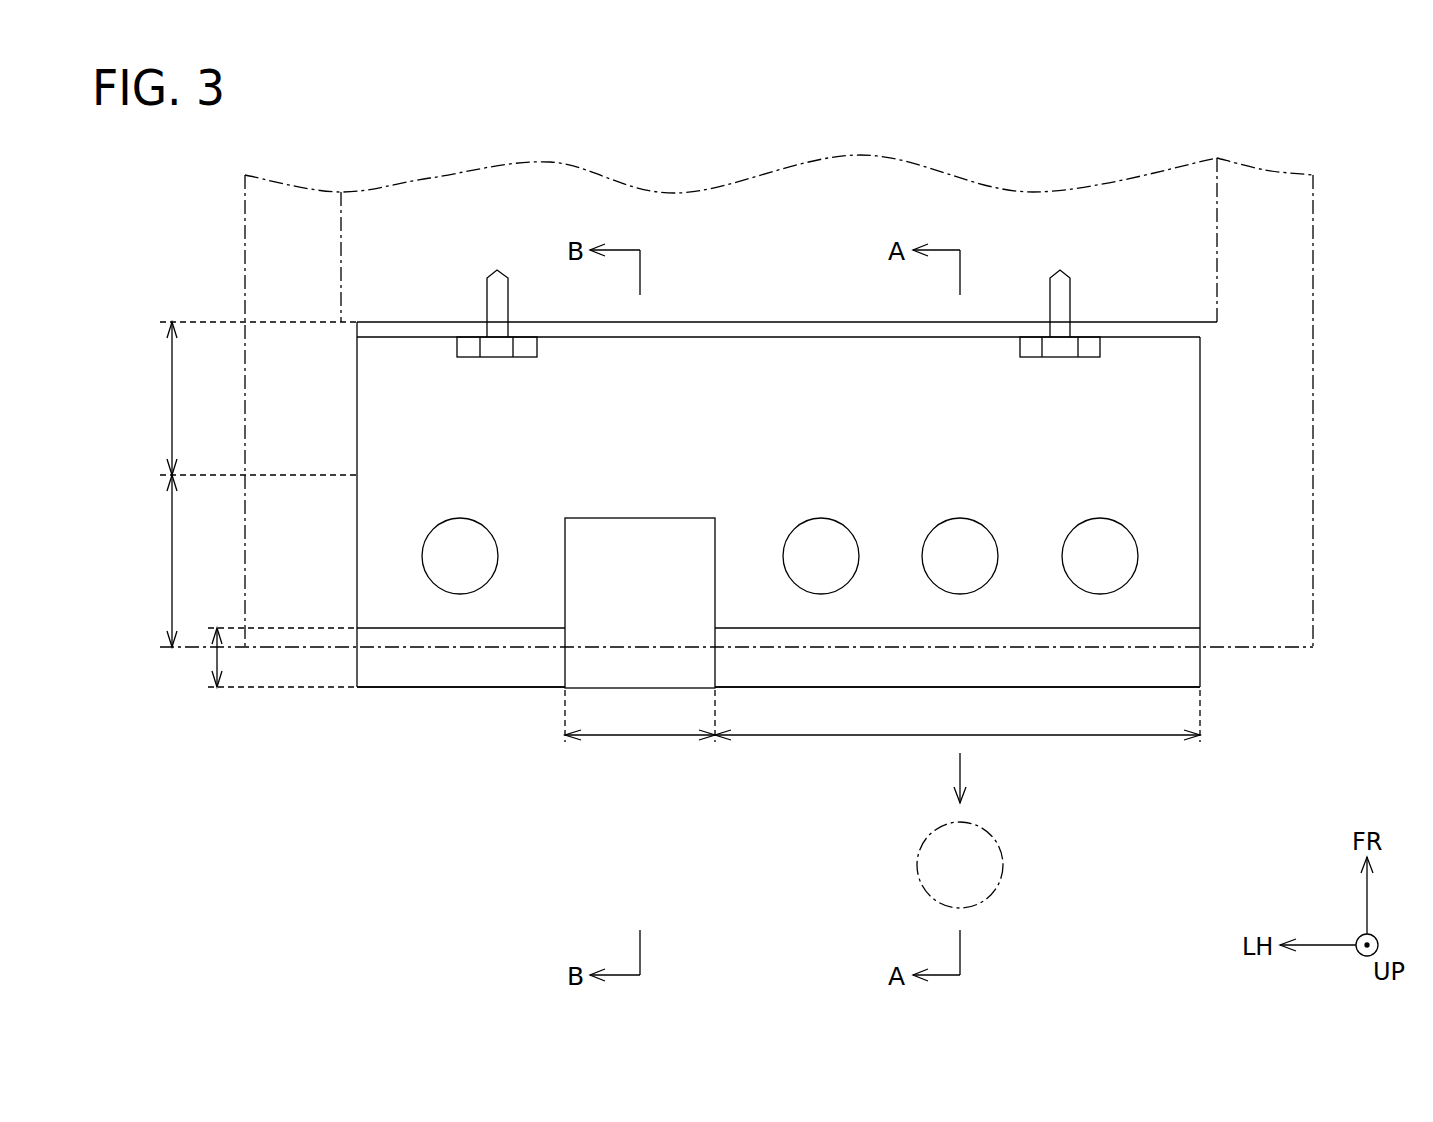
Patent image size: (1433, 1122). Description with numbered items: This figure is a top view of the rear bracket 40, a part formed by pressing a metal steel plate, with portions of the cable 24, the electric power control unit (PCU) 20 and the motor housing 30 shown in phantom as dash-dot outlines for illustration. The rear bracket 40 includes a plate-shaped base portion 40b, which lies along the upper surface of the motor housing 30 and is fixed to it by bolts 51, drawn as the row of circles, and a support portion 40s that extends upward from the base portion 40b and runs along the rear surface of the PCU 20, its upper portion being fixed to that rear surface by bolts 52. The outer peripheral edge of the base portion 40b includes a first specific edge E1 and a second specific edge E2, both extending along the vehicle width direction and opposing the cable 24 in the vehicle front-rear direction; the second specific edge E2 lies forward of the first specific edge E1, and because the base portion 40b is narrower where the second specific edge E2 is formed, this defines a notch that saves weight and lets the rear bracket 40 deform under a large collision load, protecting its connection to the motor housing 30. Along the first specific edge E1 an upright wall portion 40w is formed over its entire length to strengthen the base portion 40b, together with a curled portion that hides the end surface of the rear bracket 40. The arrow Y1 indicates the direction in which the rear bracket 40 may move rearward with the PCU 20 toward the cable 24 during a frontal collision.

The PCU 20 is at (341, 255).
The cable 24 is at (1003, 868).
The motor housing 30 is at (245, 240).
The rear bracket 40 is at (1208, 452).
The support portion 40s is at (172, 403).
The base portion 40b is at (172, 553).
The upright wall portion 40w is at (210, 657).
The bolts 51 is at (461, 568).
The bolts 52 is at (470, 348).
The first specific edge E1 is at (805, 737).
The second specific edge E2 is at (672, 737).
The arrow Y1 is at (963, 775).